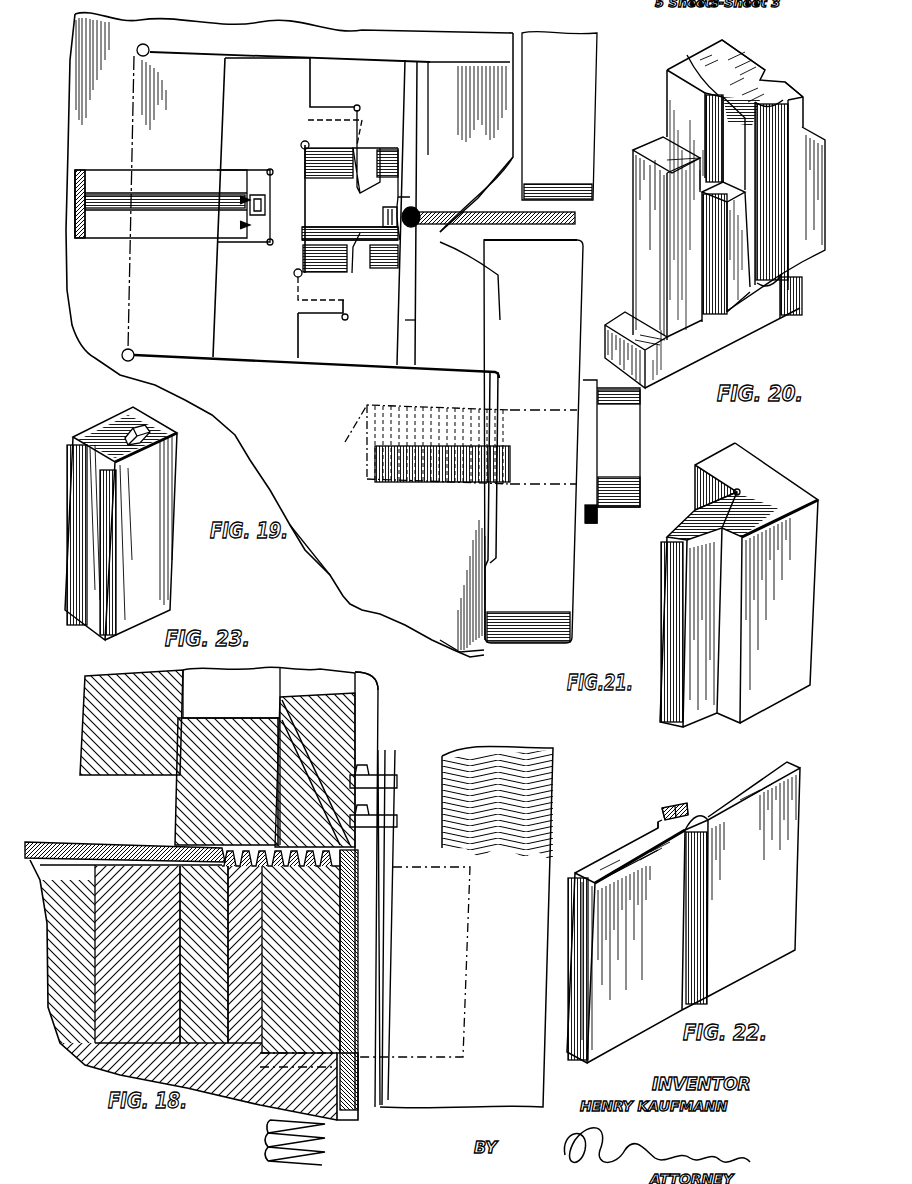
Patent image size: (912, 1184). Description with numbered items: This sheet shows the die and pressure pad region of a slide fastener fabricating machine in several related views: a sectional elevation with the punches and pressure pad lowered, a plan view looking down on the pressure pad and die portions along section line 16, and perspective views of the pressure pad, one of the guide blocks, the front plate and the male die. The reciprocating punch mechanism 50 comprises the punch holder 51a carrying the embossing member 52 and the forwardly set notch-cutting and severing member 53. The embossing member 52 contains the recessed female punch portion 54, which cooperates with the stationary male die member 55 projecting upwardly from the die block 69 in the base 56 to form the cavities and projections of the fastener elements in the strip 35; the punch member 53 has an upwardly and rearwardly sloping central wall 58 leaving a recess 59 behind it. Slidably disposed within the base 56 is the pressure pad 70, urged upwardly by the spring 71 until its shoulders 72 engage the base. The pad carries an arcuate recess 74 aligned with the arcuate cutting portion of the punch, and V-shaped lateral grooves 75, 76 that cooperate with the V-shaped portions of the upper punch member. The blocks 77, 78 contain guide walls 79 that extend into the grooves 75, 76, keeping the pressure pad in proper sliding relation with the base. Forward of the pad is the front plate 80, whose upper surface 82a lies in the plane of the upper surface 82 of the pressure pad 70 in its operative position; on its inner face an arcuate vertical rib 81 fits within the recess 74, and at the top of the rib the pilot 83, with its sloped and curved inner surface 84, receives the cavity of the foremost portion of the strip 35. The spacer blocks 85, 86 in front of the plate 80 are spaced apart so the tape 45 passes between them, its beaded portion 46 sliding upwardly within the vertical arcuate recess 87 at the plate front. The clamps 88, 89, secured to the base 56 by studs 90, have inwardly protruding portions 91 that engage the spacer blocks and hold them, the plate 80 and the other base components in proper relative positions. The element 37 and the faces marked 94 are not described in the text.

In FIG. 19, the section line 16 is at (325, 382).
In FIG. 19, the strip 35 is at (124, 222).
In FIG. 18, the strip 35 is at (56, 843).
In FIG. 19, the rod 37 is at (143, 195).
In FIG. 19, the tape 45 is at (508, 226).
In FIG. 18, the tape 45 is at (440, 766).
In FIG. 19, the beaded portion 46 is at (418, 226).
In FIG. 18, the punch mechanism 50 is at (380, 694).
In FIG. 18, the punch holder 51a is at (78, 777).
In FIG. 18, the embossing member 52 is at (178, 818).
In FIG. 18, the notch-cutting and severing member 53 is at (380, 722).
In FIG. 18, the recessed female punch portion 54 is at (218, 850).
In FIG. 19, the male die member 55 is at (266, 204).
In FIG. 23, the male die member 55 is at (152, 432).
In FIG. 18, the male die member 55 is at (230, 870).
In FIG. 19, the base 56 is at (342, 578).
In FIG. 18, the base 56 is at (50, 980).
In FIG. 18, the central wall 58 is at (320, 816).
In FIG. 18, the recess 59 is at (283, 755).
In FIG. 19, the die block 69 is at (248, 245).
In FIG. 23, the die block 69 is at (178, 455).
In FIG. 18, the die block 69 is at (207, 1045).
In FIG. 19, the pressure pad 70 is at (305, 238).
In FIG. 20, the pressure pad 70 is at (676, 64).
In FIG. 18, the pressure pad 70 is at (262, 1107).
In FIG. 18, the spring 71 is at (266, 1146).
In FIG. 20, the shoulders 72 is at (800, 268).
In FIG. 20, the arcuate recess 74 is at (793, 85).
In FIG. 20, the V-shaped lateral groove 75 is at (690, 57).
In FIG. 20, the V-shaped lateral groove 76 is at (768, 82).
In FIG. 19, the block 77 is at (385, 355).
In FIG. 19, the block 78 is at (386, 76).
In FIG. 21, the block 78 is at (755, 462).
In FIG. 19, the guide walls 79 is at (305, 272).
In FIG. 21, the guide walls 79 is at (684, 531).
In FIG. 19, the front plate 80 is at (416, 280).
In FIG. 22, the front plate 80 is at (622, 1030).
In FIG. 22, the vertical rib 81 is at (658, 824).
In FIG. 20, the upper surface 82 is at (737, 58).
In FIG. 22, the upper surface 82a is at (648, 847).
In FIG. 19, the pilot 83 is at (398, 208).
In FIG. 22, the pilot 83 is at (689, 806).
In FIG. 22, the inner surface 84 is at (672, 808).
In FIG. 19, the spacer block 85 is at (450, 358).
In FIG. 19, the spacer block 86 is at (462, 75).
In FIG. 19, the vertical arcuate recess 87 is at (404, 242).
In FIG. 22, the vertical arcuate recess 87 is at (700, 812).
In FIG. 19, the clamp 88 is at (584, 252).
In FIG. 19, the clamp 89 is at (592, 80).
In FIG. 19, the studs 90 is at (424, 465).
In FIG. 19, the inwardly protruding portions 91 is at (486, 262).
In FIG. 20, the tab 94 is at (808, 140).